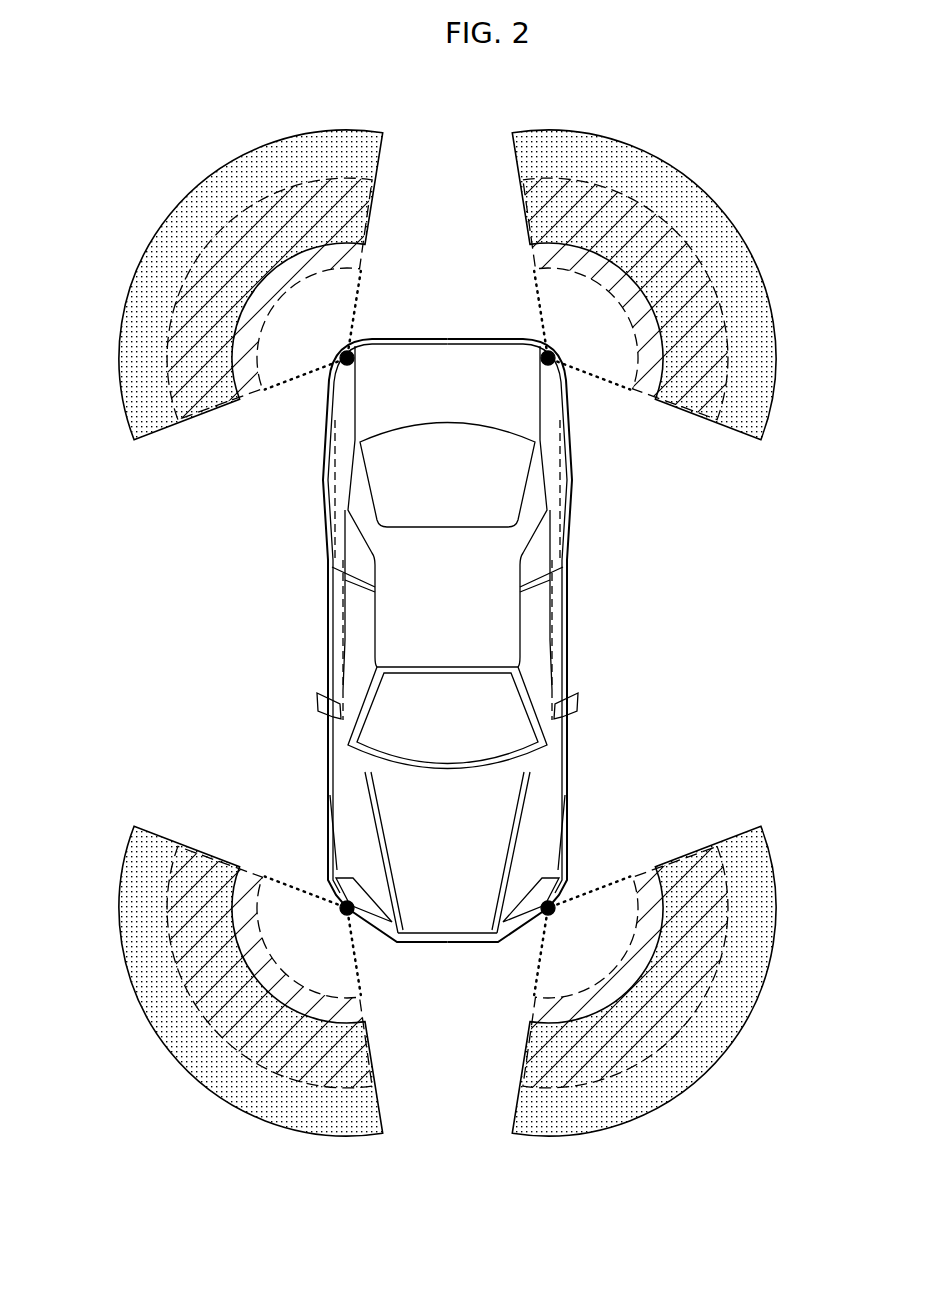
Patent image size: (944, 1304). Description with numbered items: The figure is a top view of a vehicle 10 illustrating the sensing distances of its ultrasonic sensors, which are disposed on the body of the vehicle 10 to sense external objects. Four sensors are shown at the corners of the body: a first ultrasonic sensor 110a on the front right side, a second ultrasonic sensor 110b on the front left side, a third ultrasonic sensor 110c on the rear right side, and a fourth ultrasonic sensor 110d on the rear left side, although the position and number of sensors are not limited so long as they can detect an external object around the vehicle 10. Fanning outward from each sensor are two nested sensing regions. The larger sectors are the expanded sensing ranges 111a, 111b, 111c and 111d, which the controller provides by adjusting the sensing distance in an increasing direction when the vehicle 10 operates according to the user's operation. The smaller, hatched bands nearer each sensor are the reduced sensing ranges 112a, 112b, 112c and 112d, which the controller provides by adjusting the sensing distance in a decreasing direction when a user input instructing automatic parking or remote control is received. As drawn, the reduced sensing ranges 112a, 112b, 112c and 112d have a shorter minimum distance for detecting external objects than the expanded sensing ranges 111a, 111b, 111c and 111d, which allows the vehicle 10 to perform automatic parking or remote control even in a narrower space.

The vehicle 10 is at (562, 605).
The first ultrasonic sensor 110a is at (347, 908).
The second ultrasonic sensor 110b is at (548, 908).
The third ultrasonic sensor 110c is at (548, 358).
The fourth ultrasonic sensor 110d is at (347, 358).
The expanded sensing range 111a is at (200, 1083).
The expanded sensing range 111b is at (695, 1083).
The expanded sensing range 111c is at (692, 187).
The expanded sensing range 111d is at (203, 187).
The reduced sensing range 112a is at (167, 948).
The reduced sensing range 112b is at (729, 948).
The reduced sensing range 112c is at (717, 293).
The reduced sensing range 112d is at (178, 293).